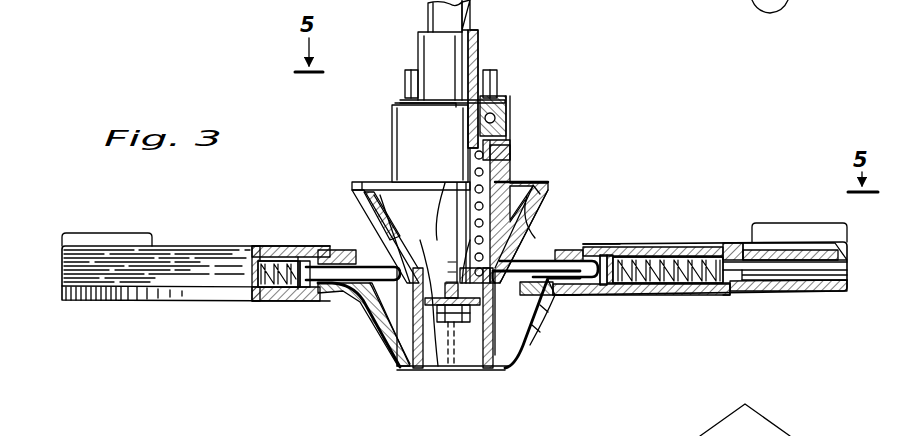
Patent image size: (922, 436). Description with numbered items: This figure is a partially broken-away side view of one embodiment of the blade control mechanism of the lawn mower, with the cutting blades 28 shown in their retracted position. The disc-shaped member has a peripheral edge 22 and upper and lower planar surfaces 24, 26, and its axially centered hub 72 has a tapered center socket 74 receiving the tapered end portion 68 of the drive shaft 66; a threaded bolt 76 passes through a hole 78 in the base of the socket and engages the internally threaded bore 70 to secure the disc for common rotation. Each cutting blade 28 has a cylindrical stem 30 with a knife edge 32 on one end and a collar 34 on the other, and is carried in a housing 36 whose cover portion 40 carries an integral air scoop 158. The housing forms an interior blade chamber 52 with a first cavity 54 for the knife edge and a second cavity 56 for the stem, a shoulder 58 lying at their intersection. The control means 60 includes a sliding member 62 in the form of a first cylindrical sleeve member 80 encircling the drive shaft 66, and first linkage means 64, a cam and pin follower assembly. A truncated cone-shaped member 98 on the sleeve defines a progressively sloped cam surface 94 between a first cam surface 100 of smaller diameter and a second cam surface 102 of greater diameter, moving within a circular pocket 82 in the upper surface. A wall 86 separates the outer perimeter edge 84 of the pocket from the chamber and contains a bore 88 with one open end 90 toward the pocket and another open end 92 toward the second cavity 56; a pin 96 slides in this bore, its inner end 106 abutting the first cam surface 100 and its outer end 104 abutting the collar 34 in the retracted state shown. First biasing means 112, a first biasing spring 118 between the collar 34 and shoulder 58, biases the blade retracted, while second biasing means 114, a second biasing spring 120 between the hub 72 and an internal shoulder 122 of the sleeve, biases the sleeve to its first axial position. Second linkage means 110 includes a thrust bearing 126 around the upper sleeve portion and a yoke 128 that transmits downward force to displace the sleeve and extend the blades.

The peripheral edge 22 is at (62, 266).
The upper planar surface 24 is at (700, 283).
The lower planar surface 26 is at (104, 302).
The cutting blade 28 is at (263, 251).
The cylindrical stem 30 is at (262, 289).
The knife edge 32 is at (826, 278).
The collar 34 is at (298, 303).
The housing 36 is at (796, 294).
The cover portion 40 is at (204, 232).
The interior blade chamber 52 is at (648, 240).
The first cavity 54 is at (770, 264).
The second cavity 56 is at (680, 258).
The shoulder 58 is at (746, 252).
The control means 60 is at (540, 70).
The sliding member 62 is at (512, 112).
The first linkage means 64 is at (530, 246).
The drive shaft 66 is at (432, 12).
The tapered end portion 68 is at (440, 372).
The internally threaded bore 70 is at (449, 370).
The hub 72 is at (518, 288).
The tapered center socket 74 is at (458, 238).
The threaded bolt 76 is at (464, 324).
The hole 78 is at (490, 306).
The first cylindrical sleeve member 80 is at (424, 124).
The circular pocket 82 is at (388, 236).
The outer perimeter edge 84 is at (356, 266).
The wall 86 is at (336, 302).
The bore 88 is at (350, 318).
The open end 90 is at (378, 310).
The open end 92 is at (325, 251).
The progressively sloped cam surface 94 is at (351, 200).
The pin 96 is at (414, 250).
The truncated cone-shaped member 98 is at (400, 196).
The first cam surface 100 is at (412, 366).
The second cam surface 102 is at (366, 181).
The outer end 104 is at (306, 291).
The inner end 106 is at (396, 346).
The second linkage means 110 is at (502, 34).
The first biasing means 112 is at (748, 294).
The second biasing means 114 is at (512, 180).
The first biasing spring 118 is at (274, 301).
The second biasing spring 120 is at (550, 188).
The internal shoulder 122 is at (508, 148).
The thrust bearing 126 is at (509, 104).
The yoke 128 is at (498, 72).
The air scoop 158 is at (92, 240).